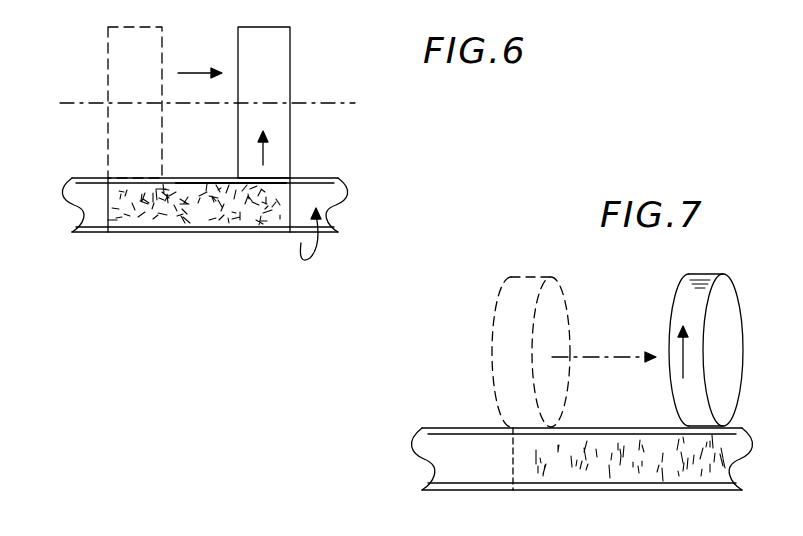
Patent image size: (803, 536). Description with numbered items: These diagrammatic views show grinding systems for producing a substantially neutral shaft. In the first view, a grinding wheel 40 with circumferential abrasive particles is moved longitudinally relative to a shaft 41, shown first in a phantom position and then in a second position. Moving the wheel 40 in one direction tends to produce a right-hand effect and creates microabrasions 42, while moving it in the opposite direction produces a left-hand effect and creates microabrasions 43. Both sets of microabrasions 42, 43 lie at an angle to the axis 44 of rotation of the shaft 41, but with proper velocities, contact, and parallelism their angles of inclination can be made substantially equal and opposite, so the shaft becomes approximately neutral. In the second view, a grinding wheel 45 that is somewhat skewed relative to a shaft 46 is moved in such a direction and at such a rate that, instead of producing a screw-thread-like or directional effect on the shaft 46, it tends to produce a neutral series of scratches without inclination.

In FIG. 6, the grinding wheel 40 is at (156, 60).
In FIG. 6, the shaft 41 is at (242, 233).
In FIG. 6, the microabrasions 42 is at (187, 210).
In FIG. 6, the microabrasions 43 is at (158, 236).
In FIG. 6, the axis of rotation 44 is at (82, 193).
In FIG. 7, the grinding wheel 45 is at (556, 297).
In FIG. 7, the shaft 46 is at (466, 466).